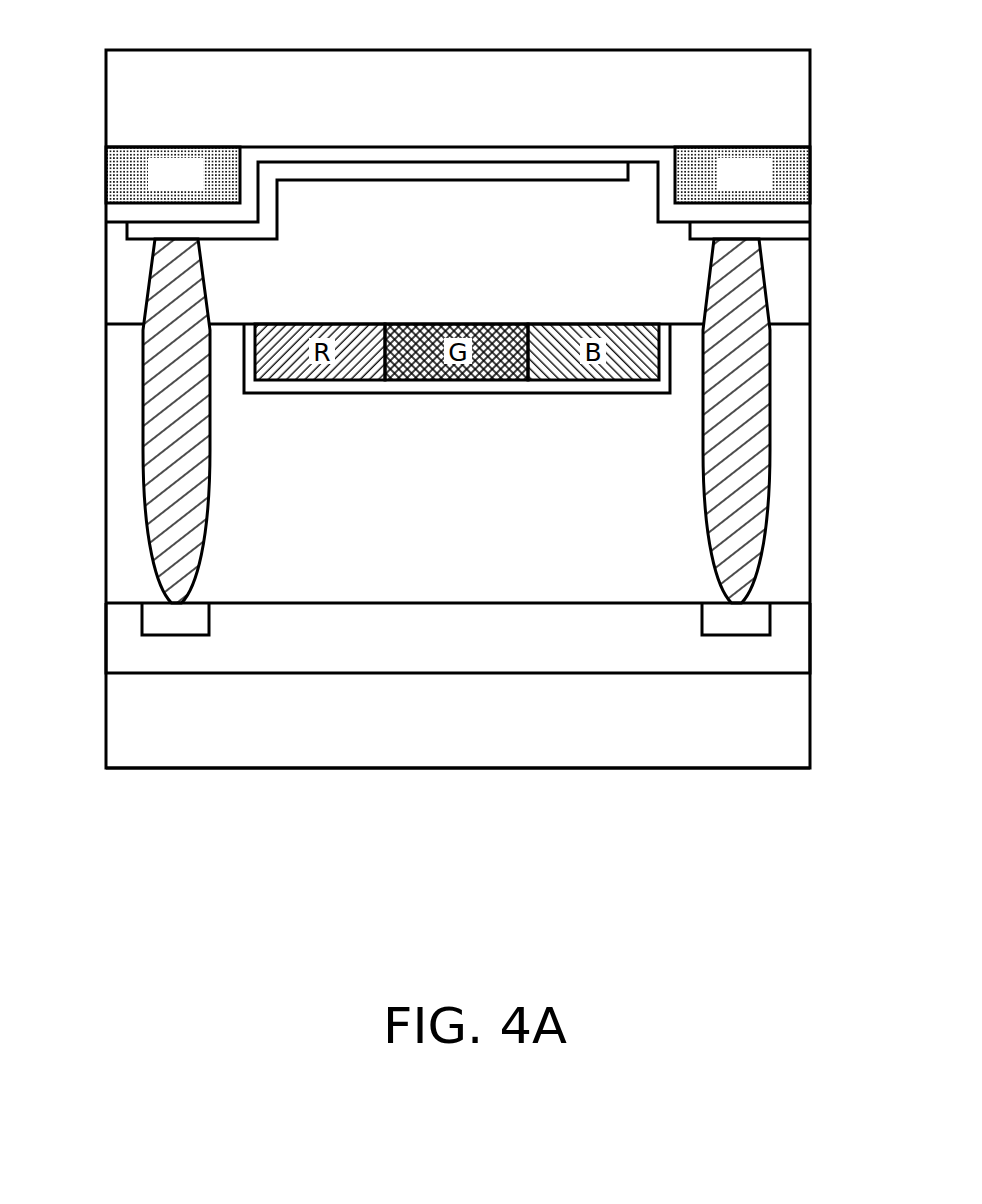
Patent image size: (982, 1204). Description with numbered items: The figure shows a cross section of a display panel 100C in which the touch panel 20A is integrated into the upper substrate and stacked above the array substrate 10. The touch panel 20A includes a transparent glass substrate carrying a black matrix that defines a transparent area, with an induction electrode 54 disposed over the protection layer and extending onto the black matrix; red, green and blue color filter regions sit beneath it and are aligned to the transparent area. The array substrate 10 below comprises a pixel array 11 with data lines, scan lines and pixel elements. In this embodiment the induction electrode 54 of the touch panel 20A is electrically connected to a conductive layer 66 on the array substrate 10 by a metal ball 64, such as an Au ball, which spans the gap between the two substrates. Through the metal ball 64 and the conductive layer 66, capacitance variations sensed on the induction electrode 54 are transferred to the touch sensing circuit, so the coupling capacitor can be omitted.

The pixel structure of display panel 100C is at (205, 819).
The touch panel 20A is at (99, 323).
The induction electrode 54 is at (580, 181).
The metal ball 64 is at (143, 406).
The conductive layer 66 is at (197, 602).
The pixel array 11 is at (810, 647).
The array substrate 10 is at (94, 603).